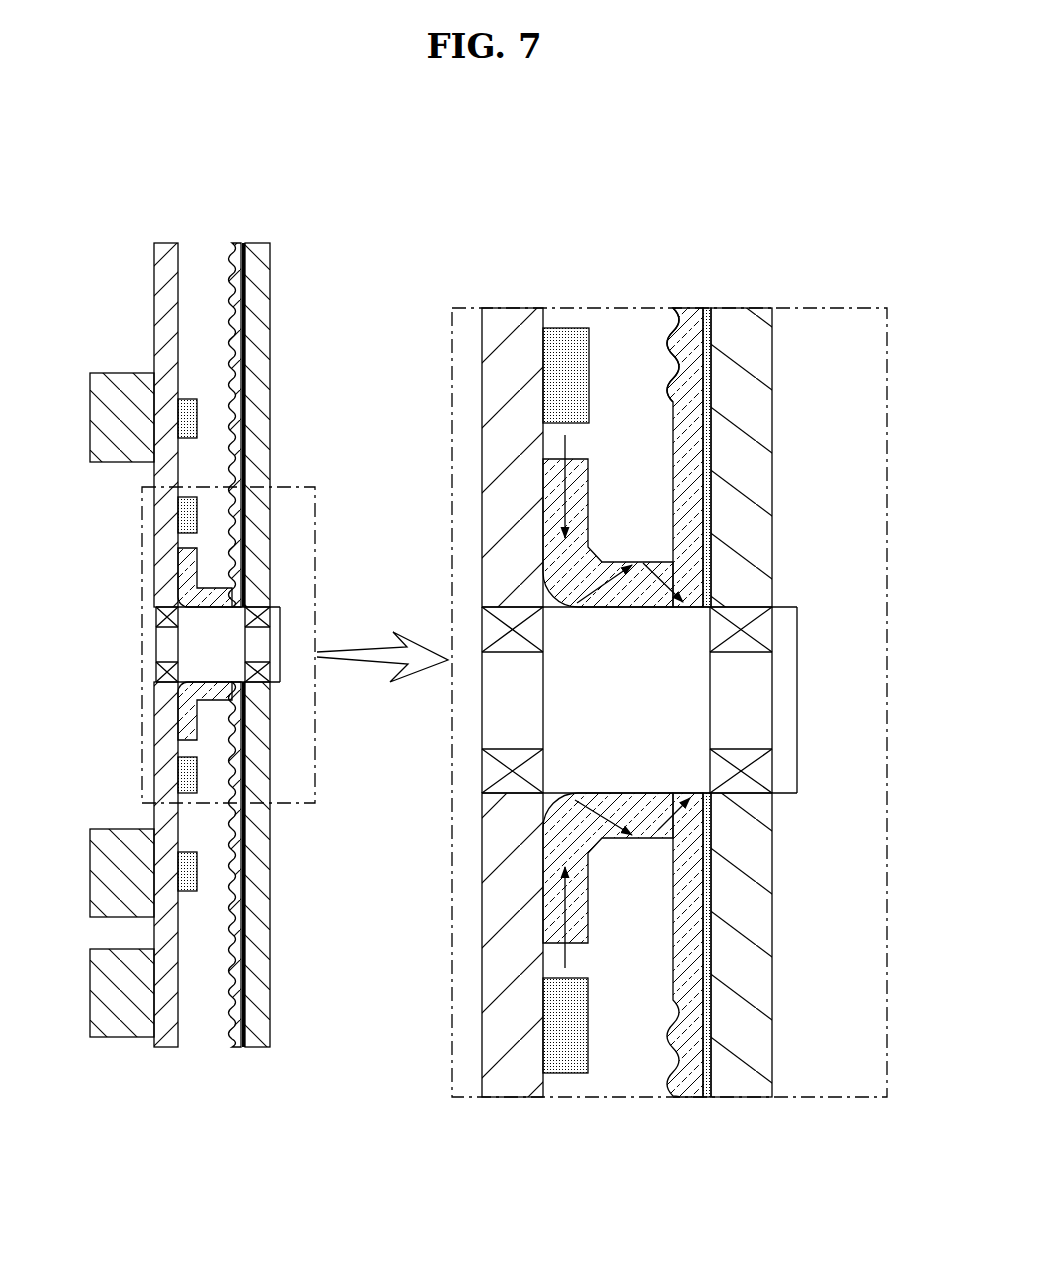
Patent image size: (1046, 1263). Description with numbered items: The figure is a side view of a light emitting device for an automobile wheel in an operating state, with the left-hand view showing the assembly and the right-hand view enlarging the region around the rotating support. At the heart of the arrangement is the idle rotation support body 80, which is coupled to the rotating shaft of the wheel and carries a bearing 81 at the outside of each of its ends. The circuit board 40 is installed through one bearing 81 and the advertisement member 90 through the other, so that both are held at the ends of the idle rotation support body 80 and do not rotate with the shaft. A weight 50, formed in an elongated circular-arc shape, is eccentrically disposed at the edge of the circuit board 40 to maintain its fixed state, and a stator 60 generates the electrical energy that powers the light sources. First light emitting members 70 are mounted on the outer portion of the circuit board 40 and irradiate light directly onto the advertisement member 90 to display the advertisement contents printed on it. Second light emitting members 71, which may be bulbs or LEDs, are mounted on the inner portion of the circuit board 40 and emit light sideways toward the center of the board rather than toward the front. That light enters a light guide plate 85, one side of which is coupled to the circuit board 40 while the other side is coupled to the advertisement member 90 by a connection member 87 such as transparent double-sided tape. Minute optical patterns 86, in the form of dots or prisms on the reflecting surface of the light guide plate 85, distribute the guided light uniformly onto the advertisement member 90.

The circuit board 40 is at (165, 250).
The weight 50 is at (120, 1030).
The stator 60 is at (120, 378).
The first light emitting member 70 is at (197, 418).
The second light emitting member 71 is at (185, 513).
The idle rotation support body 80 is at (672, 764).
The bearing 81 is at (165, 615).
The light guide plate 85 is at (690, 320).
The optical pattern 86 is at (670, 325).
The connection member 87 is at (705, 310).
The advertisement member 90 is at (265, 303).